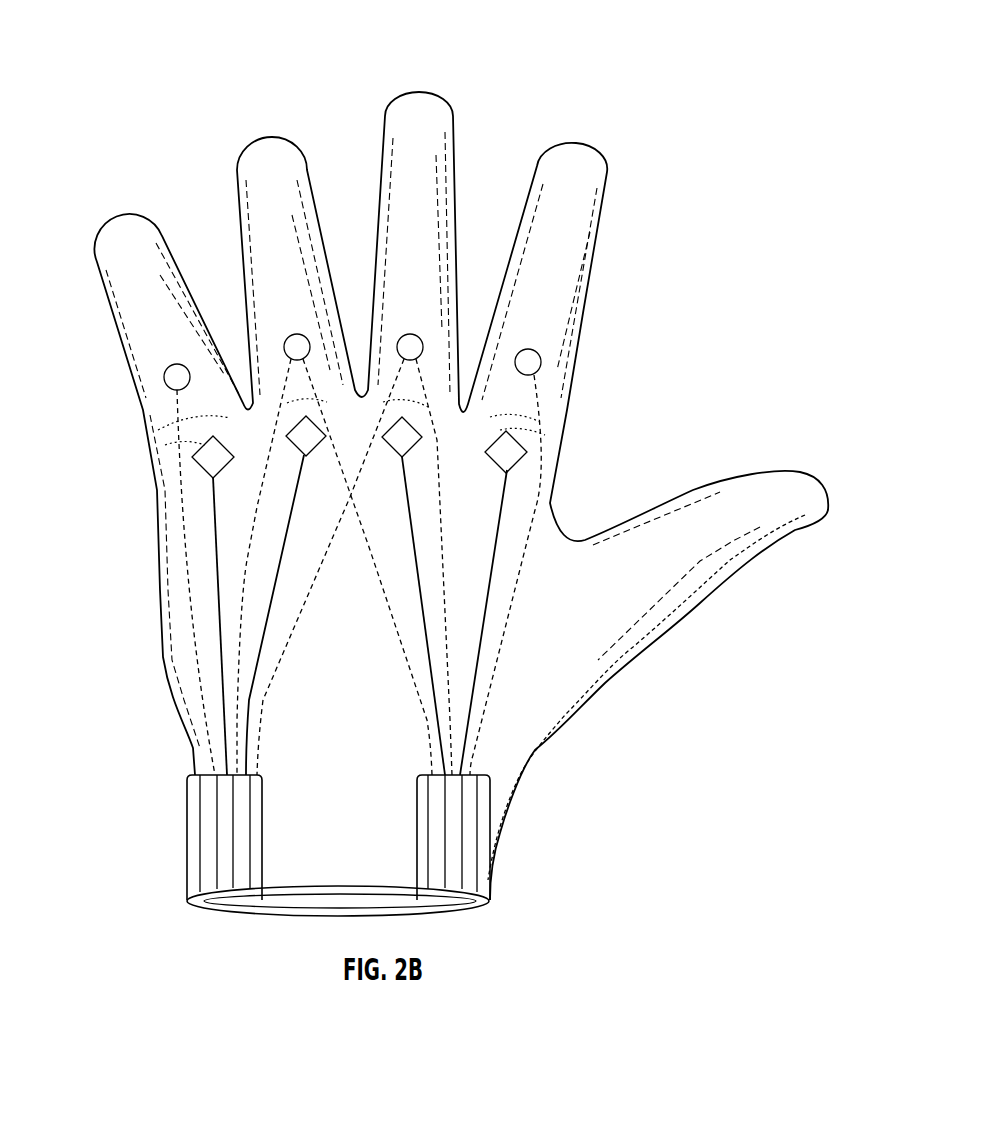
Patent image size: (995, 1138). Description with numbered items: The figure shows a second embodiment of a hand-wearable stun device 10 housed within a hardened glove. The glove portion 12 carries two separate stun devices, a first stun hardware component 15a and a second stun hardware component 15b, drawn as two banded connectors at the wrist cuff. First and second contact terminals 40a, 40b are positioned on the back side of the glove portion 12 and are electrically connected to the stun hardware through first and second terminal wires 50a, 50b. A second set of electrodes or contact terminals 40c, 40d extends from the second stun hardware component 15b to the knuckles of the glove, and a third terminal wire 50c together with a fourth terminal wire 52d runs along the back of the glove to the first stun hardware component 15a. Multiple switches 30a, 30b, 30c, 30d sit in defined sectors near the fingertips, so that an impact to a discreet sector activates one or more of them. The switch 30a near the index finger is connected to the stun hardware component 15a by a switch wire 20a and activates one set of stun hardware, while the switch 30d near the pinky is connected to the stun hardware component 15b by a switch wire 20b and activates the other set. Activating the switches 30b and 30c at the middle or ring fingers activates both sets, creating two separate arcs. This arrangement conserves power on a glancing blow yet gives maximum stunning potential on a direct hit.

The glove sensor system 10 is at (788, 237).
The glove portion 12 is at (262, 172).
The first stun hardware component 15a is at (518, 855).
The second stun hardware component 15b is at (203, 928).
The switch wire 20a is at (560, 412).
The switch wire 20b is at (182, 427).
The switch 30a is at (541, 353).
The switch 30b is at (413, 334).
The switch 30c is at (297, 334).
The switch 30d is at (168, 368).
The first contact terminal 40a is at (413, 457).
The second contact terminal 40b is at (642, 710).
The contact terminal 40c is at (303, 450).
The contact terminal 40d is at (207, 470).
The first terminal wire 50a is at (480, 641).
The second terminal wire 50b is at (483, 622).
The third terminal wire 50c is at (275, 615).
The fourth conductor 52d is at (210, 582).